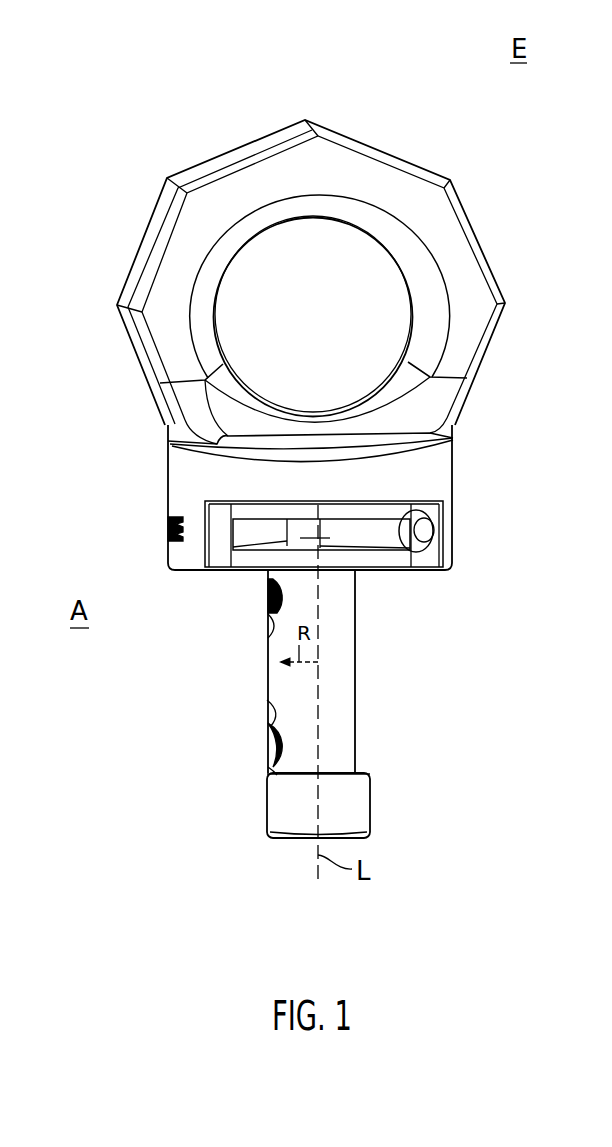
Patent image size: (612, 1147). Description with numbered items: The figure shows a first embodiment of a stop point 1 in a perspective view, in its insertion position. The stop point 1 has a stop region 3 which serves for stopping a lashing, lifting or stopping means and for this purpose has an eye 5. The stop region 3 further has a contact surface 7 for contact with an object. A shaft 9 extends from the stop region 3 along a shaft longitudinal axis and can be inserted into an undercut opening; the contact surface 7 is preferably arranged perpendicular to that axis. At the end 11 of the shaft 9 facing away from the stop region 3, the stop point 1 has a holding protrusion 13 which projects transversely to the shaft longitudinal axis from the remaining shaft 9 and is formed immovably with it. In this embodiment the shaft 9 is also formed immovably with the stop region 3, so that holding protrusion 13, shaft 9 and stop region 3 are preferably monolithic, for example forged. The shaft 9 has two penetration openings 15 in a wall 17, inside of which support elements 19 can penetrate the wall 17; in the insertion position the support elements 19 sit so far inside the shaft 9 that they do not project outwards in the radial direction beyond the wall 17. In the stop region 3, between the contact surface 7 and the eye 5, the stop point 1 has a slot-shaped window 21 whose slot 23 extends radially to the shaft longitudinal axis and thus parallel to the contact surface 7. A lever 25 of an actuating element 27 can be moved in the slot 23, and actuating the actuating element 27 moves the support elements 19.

The stop point 1 is at (198, 82).
The stop region 3 is at (115, 105).
The eye 5 is at (492, 231).
The contact surface 7 is at (183, 579).
The shaft 9 is at (389, 684).
The end of the shaft 11 is at (289, 851).
The holding protrusion 13 is at (366, 765).
The penetration openings 15 is at (267, 639).
The wall 17 is at (267, 670).
The support elements 19 is at (272, 600).
The slot-shaped window 21 is at (307, 516).
The slot 23 is at (303, 533).
The lever 25 is at (427, 530).
The actuating element 27 is at (313, 537).